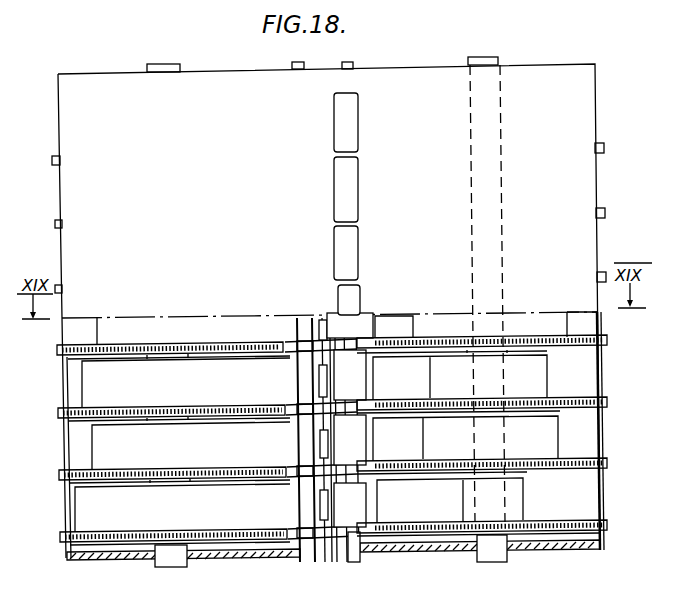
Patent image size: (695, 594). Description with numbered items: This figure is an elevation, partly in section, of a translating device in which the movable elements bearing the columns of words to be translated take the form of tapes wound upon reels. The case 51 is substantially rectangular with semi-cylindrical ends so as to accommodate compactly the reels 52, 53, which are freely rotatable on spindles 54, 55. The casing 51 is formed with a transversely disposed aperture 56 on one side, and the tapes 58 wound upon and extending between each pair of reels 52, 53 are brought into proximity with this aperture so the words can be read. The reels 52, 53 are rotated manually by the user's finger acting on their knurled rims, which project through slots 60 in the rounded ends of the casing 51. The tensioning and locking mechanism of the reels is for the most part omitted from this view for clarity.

The case 51 is at (247, 80).
The reel 52 is at (57, 220).
The reel 53 is at (603, 410).
The spindle 54 is at (181, 560).
The spindle 55 is at (498, 548).
The aperture 56 is at (368, 213).
The tape 58 is at (260, 513).
The slot 60 is at (598, 498).